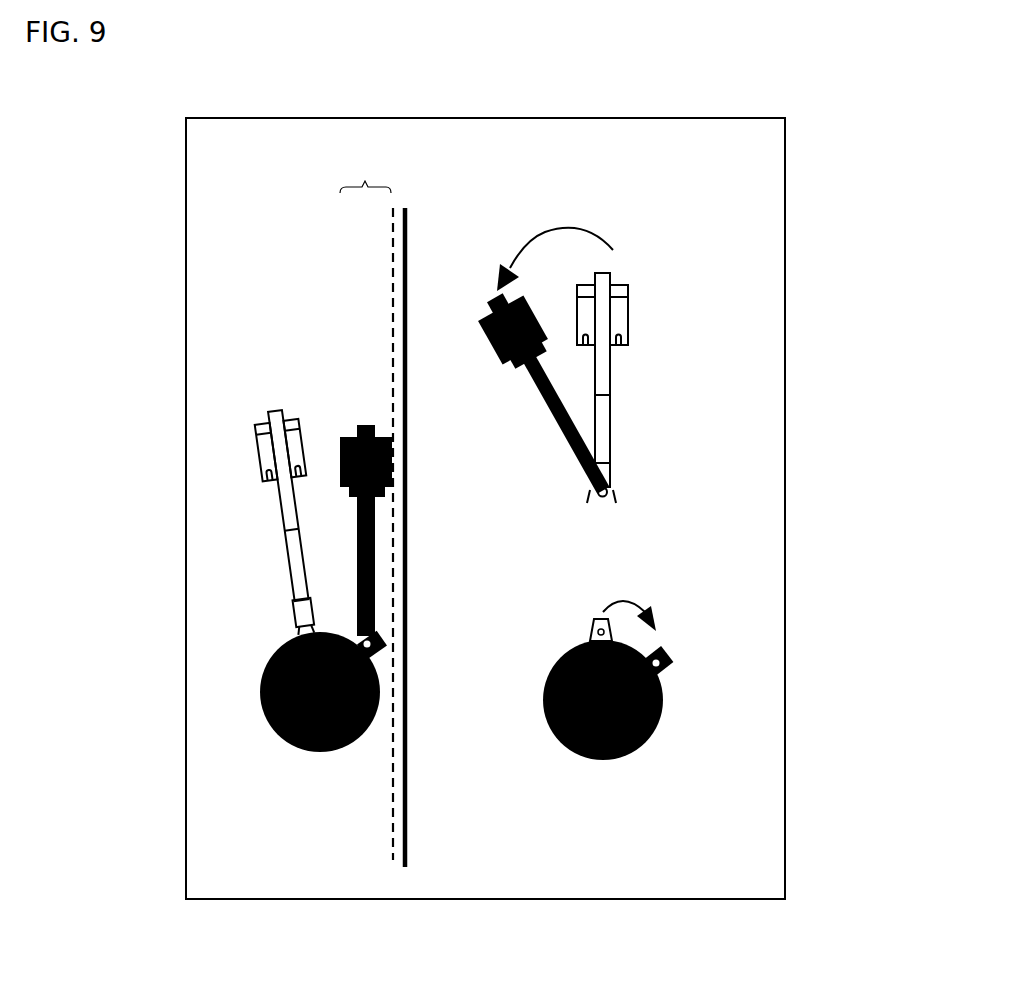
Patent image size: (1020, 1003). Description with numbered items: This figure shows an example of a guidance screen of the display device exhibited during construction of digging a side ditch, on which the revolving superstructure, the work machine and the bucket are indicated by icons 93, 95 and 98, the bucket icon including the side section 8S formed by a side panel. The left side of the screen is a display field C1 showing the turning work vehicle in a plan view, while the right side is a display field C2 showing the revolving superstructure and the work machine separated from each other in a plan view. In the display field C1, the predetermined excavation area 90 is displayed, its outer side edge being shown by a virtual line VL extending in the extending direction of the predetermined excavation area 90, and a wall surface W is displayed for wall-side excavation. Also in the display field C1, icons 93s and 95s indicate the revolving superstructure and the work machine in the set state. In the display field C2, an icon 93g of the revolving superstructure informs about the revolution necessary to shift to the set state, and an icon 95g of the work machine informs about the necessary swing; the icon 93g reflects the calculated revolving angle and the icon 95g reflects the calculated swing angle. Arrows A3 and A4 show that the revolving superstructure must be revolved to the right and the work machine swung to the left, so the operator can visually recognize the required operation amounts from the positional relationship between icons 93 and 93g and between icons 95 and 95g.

The predetermined excavation area 90 is at (365, 170).
The virtual line VL is at (393, 810).
The wall surface W is at (406, 790).
The display field C1 is at (256, 886).
The display field C2 is at (635, 886).
The icon 95 is at (290, 517).
The icon 98 is at (258, 424).
The side section 8S is at (628, 325).
The icon 95s is at (365, 425).
The icon 95g is at (578, 448).
The icon 93 is at (460, 694).
The icon 93s is at (280, 730).
The icon 93g is at (668, 672).
The arrow A3 is at (642, 603).
The arrow A4 is at (542, 232).